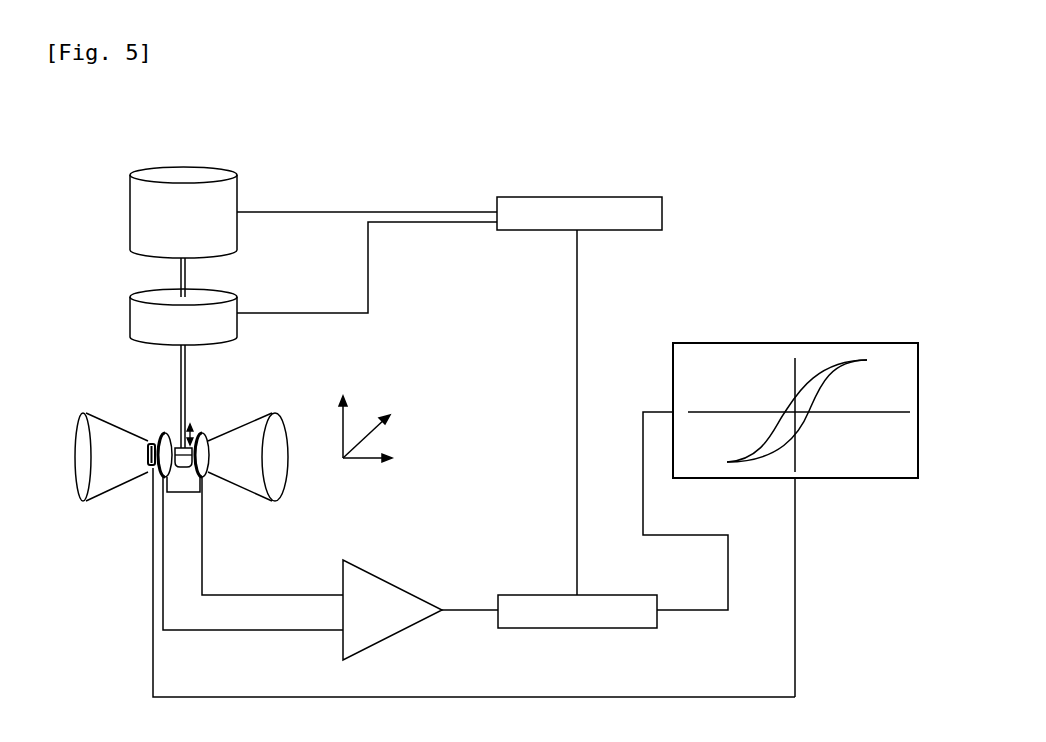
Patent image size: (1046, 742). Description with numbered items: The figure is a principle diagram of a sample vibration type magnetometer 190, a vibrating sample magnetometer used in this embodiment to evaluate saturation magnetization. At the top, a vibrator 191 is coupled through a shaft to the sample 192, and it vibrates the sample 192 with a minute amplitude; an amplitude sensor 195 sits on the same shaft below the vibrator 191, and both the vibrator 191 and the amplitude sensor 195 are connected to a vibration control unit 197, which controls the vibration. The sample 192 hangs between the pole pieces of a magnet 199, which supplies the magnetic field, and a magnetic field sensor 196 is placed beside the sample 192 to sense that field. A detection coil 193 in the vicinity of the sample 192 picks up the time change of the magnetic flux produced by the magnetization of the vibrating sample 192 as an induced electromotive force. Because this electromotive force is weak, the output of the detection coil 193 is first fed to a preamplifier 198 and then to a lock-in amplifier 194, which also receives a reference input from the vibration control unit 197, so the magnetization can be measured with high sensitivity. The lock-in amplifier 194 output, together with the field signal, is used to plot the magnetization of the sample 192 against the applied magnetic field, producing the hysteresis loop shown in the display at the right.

The sample vibration type magnetometer 190 is at (731, 165).
The vibrator 191 is at (229, 198).
The amplitude sensor 195 is at (229, 313).
The vibration control unit 197 is at (608, 197).
The sample 192 is at (177, 447).
The detection coil 193 is at (170, 482).
The magnetic field sensor 196 is at (153, 468).
The magnet 199 is at (90, 438).
The preamplifier 198 is at (388, 590).
The lock-in amplifier 194 is at (605, 595).